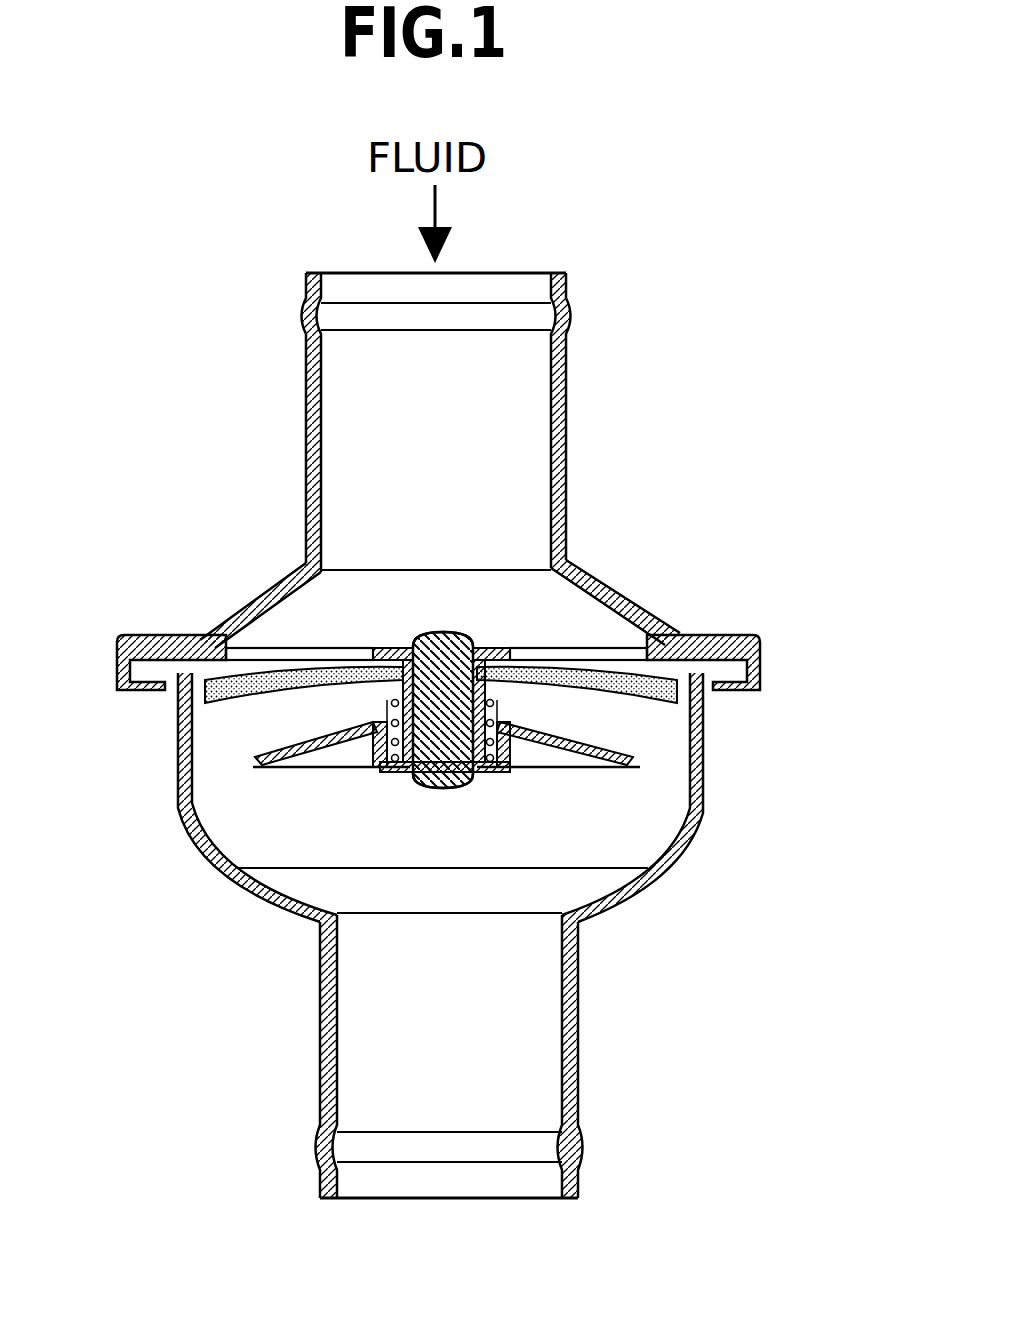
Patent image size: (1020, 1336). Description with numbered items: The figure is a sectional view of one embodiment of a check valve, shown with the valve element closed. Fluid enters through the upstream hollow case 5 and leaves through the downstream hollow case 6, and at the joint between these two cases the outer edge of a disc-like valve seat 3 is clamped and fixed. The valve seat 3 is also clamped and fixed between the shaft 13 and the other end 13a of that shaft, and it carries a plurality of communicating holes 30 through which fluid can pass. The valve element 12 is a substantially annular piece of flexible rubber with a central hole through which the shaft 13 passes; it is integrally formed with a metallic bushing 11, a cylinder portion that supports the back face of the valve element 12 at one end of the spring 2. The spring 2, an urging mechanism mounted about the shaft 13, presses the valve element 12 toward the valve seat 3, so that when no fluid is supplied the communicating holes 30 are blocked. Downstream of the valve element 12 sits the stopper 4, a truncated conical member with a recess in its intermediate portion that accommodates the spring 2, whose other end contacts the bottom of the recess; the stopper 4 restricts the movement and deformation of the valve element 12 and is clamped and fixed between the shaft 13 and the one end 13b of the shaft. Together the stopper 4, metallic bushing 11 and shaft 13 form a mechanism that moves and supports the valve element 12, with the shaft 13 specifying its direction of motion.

The spring 2 is at (387, 700).
The valve seat 3 is at (383, 647).
The stopper 4 is at (297, 773).
The upstream hollow case 5 is at (567, 413).
The downstream hollow case 6 is at (320, 1105).
The metallic bushing 11 is at (490, 713).
The valve element 12 is at (230, 703).
The shaft 13 is at (507, 647).
The other end of the shaft 13a is at (448, 645).
The one end of the shaft 13b is at (467, 787).
The communicating hole 30 is at (593, 647).